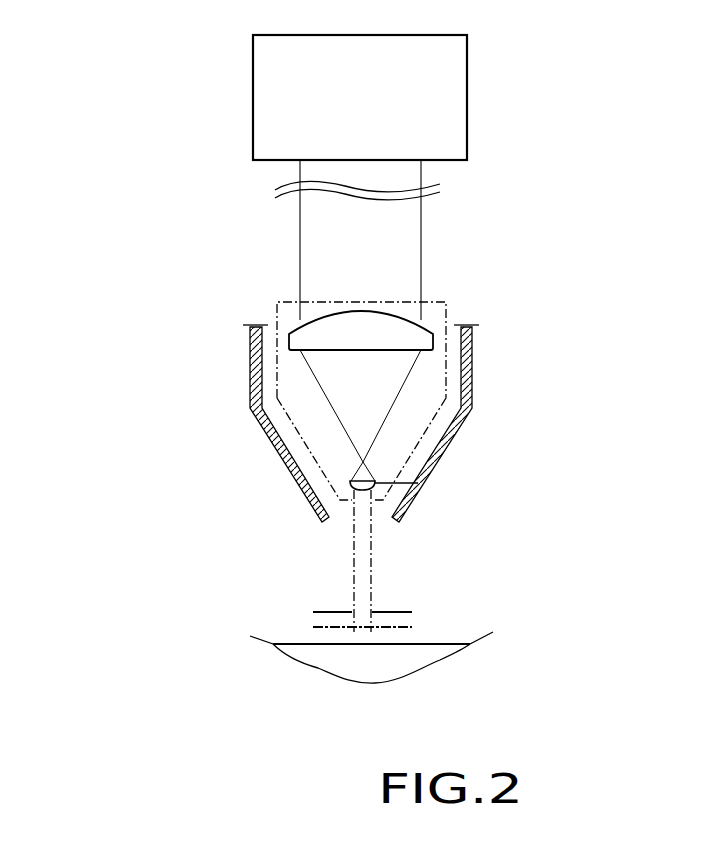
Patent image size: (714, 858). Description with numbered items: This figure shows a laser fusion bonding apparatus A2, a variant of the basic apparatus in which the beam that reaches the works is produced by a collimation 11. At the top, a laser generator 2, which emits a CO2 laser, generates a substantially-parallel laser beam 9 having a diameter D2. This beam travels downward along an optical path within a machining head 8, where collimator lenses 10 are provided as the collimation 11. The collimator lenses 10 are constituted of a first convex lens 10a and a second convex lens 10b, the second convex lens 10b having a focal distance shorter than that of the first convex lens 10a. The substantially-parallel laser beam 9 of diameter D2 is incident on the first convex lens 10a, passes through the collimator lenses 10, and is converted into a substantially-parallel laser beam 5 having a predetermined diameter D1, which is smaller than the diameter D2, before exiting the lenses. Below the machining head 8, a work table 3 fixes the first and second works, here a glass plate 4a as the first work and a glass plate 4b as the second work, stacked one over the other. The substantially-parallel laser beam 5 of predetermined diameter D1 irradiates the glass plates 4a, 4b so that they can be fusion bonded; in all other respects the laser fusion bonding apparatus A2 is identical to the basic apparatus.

The laser generator 2 is at (467, 99).
The substantially-parallel laser beam 9 is at (421, 233).
The collimation 11 is at (436, 302).
The collimator lenses 10 is at (434, 416).
The first convex lens 10a is at (433, 343).
The second convex lens 10b is at (418, 483).
The machining head 8 is at (297, 480).
The substantially-parallel laser beam 5 is at (370, 540).
The glass plate 4a is at (405, 619).
The glass plate 4b is at (405, 636).
The work table 3 is at (437, 644).
The predetermined diameter D1 is at (317, 570).
The diameter D2 is at (262, 261).
The laser fusion bonding apparatus A2 is at (134, 160).